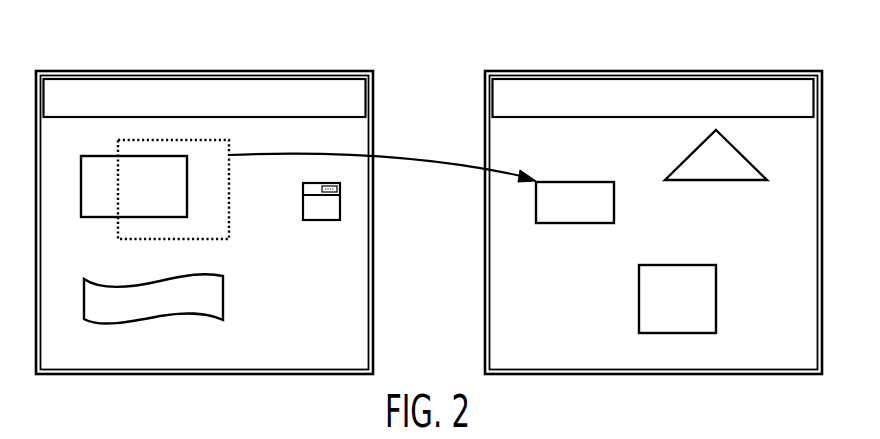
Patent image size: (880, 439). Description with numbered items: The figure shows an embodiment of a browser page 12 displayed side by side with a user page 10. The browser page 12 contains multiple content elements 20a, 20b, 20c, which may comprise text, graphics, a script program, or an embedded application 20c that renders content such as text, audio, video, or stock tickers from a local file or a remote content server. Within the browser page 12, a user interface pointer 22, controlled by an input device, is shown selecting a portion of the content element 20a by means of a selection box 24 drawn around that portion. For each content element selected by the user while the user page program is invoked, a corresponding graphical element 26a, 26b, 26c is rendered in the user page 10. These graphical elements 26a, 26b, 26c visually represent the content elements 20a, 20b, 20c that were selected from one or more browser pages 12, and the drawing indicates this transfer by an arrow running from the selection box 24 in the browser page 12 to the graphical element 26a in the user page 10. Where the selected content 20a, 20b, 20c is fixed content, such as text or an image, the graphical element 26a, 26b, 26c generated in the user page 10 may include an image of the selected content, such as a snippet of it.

The user page 10 is at (525, 70).
The browser page 12 is at (83, 70).
The content element 20a is at (81, 190).
The content element 20b is at (225, 300).
The embedded application 20c is at (342, 207).
The user interface pointer 22 is at (240, 223).
The selection box 24 is at (229, 141).
The graphical element 26a is at (575, 224).
The graphical element 26b is at (716, 182).
The graphical element 26c is at (718, 300).